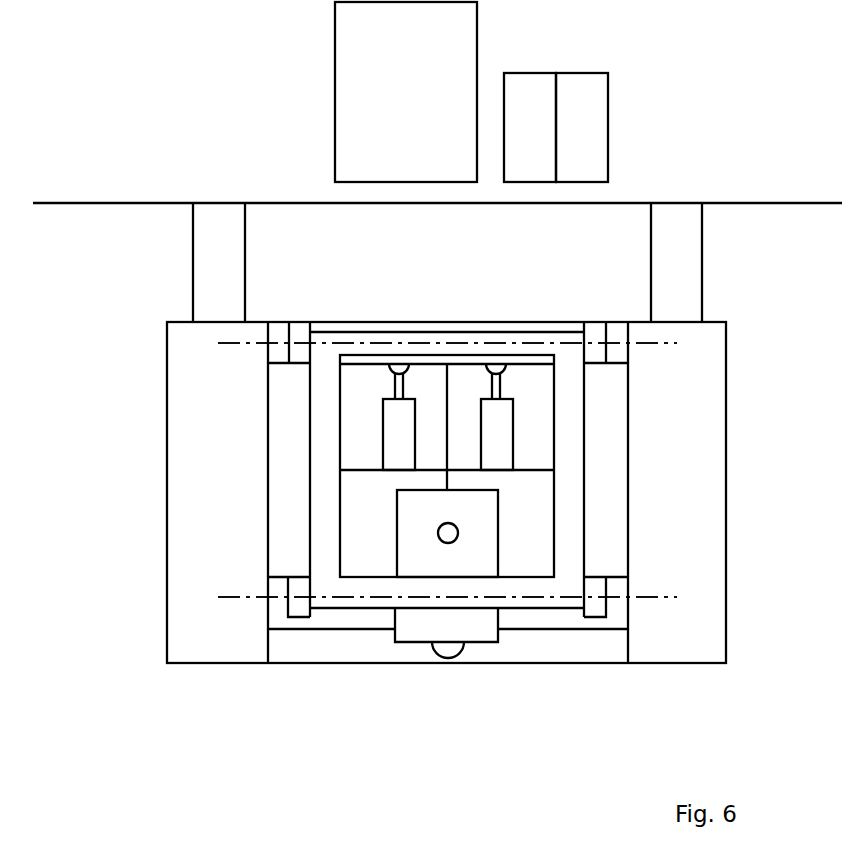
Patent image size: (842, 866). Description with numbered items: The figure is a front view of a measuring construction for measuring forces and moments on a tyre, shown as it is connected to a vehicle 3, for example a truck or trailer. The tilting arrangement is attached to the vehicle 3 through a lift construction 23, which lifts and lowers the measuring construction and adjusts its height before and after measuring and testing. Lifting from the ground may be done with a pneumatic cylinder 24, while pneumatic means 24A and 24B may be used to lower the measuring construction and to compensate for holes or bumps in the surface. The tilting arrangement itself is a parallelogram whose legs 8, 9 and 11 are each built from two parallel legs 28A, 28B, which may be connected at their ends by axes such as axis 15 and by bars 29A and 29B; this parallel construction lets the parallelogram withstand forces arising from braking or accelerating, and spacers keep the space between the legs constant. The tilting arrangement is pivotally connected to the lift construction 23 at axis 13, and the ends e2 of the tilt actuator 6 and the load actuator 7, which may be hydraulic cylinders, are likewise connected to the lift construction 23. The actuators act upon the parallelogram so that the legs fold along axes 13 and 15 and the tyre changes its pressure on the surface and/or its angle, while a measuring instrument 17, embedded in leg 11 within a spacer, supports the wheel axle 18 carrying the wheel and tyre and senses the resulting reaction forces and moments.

The vehicle 3 is at (791, 185).
The pneumatic cylinder 24 is at (422, 99).
The tilt actuator 6 is at (537, 138).
The load actuator 7 is at (591, 138).
The pneumatic means 24A is at (148, 305).
The pneumatic means 24B is at (745, 302).
The lift construction 23 is at (278, 333).
The leg 9 is at (299, 333).
The leg 8 is at (300, 608).
The leg 11 is at (339, 533).
The axis 13 is at (227, 598).
The axis 15 is at (423, 343).
The measuring instrument 17 is at (439, 523).
The wheel axle 18 is at (458, 533).
The parallel leg 28A is at (324, 490).
The parallel leg 28B is at (570, 490).
The bar 29A is at (538, 348).
The bar 29B is at (538, 586).
The end of actuator e2 is at (388, 373).